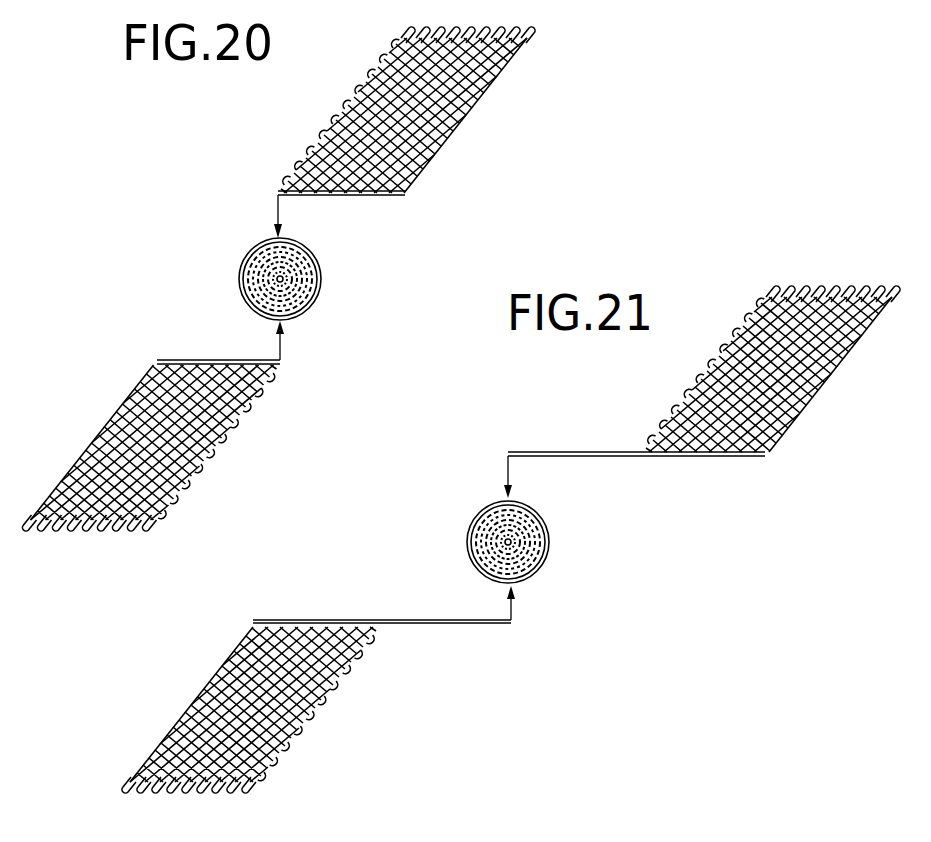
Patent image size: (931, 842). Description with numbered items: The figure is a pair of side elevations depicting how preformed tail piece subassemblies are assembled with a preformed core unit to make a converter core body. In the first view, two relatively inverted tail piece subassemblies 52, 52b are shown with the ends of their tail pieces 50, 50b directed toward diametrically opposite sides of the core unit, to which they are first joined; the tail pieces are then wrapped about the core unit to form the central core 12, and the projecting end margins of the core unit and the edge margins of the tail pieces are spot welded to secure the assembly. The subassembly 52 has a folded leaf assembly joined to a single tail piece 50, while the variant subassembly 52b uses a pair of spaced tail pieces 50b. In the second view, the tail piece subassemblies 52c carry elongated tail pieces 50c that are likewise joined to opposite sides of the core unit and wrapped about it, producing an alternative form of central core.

In FIG. 20, the central core 12 is at (321, 279).
In FIG. 21, the central core 12 is at (508, 542).
In FIG. 20, the tail piece 50 is at (352, 195).
In FIG. 20, the tail piece subassembly 52 is at (468, 136).
In FIG. 20, the tail pieces 50b is at (226, 361).
In FIG. 20, the tail piece subassembly 52b is at (284, 404).
In FIG. 21, the elongated tail pieces 50c is at (603, 456).
In FIG. 21, the tail piece subassembly 52c is at (700, 483).